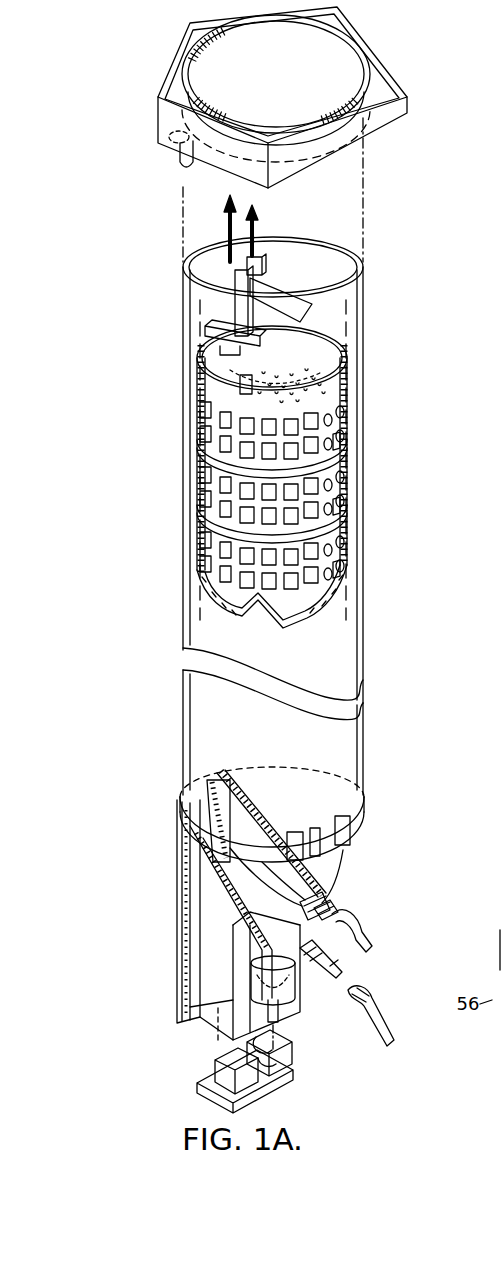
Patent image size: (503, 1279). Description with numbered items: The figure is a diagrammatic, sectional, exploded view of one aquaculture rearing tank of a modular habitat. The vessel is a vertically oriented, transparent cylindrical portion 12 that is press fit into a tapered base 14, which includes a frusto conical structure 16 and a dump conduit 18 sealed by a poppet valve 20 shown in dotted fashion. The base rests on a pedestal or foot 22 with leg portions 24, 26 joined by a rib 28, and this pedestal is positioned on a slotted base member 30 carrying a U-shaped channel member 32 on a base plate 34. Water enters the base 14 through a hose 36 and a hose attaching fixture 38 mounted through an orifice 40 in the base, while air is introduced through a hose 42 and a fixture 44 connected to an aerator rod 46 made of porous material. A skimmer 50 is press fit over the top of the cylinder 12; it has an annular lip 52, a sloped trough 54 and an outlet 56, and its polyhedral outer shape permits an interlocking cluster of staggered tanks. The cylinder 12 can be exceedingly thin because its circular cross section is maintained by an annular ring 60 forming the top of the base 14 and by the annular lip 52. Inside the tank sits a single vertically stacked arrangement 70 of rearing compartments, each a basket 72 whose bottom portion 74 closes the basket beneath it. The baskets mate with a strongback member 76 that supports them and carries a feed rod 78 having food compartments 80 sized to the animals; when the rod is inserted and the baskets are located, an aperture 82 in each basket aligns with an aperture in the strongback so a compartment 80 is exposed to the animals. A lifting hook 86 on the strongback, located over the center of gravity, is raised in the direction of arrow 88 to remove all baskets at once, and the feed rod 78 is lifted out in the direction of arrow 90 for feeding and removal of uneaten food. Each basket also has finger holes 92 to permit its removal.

The transparent cylindrical portion 12 is at (363, 306).
The tapered base 14 is at (319, 908).
The frusto conical structure 16 is at (325, 903).
The dump conduit 18 is at (301, 1002).
The poppet valve 20 is at (251, 990).
The pedestal or foot 22 is at (185, 931).
The leg portion 24 is at (180, 947).
The leg portion 26 is at (218, 1040).
The rib 28 is at (182, 927).
The slotted base member 30 is at (285, 1069).
The U-shaped channel member 32 is at (274, 1054).
The base plate 34 is at (272, 1087).
The hose 36 is at (375, 1010).
The hose attaching fixture 38 is at (344, 976).
The orifice 40 is at (298, 962).
The hose 42 is at (366, 948).
The fixture 44 is at (338, 920).
The aerator rod 46 is at (260, 862).
The skimmer 50 is at (308, 95).
The annular lip 52 is at (347, 35).
The sloped trough 54 is at (373, 133).
The outlet 56 is at (176, 168).
The annular ring 60 is at (367, 801).
The vertically stacked arrangement 70 is at (253, 441).
The basket 72 is at (338, 490).
The bottom portion 74 is at (294, 380).
The strongback member 76 is at (207, 328).
The feed rod 78 is at (264, 264).
The compartments 80 is at (262, 311).
The aperture 82 is at (240, 384).
The lifting hook 86 is at (222, 297).
The arrow 88 is at (228, 237).
The arrow 90 is at (256, 236).
The finger holes 92 is at (344, 413).